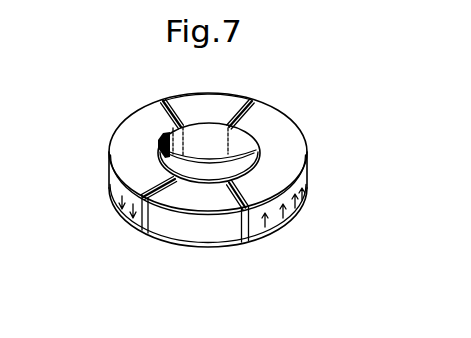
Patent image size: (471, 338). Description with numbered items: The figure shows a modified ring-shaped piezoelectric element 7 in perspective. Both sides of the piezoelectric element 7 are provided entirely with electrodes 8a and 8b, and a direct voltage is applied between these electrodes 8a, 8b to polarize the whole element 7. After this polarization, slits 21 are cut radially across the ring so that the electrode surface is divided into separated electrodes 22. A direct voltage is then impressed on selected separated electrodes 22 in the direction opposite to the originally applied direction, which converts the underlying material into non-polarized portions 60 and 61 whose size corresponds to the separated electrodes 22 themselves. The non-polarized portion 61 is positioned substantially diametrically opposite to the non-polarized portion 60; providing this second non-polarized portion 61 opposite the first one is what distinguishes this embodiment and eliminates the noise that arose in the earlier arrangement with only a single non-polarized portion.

The piezoelectric element 7 is at (311, 176).
The electrode 8a is at (123, 152).
The electrode 8b is at (277, 233).
The slits 21 is at (168, 114).
The separated electrodes 22 is at (216, 105).
The non-polarized portion 60 is at (198, 243).
The non-polarized portion 61 is at (213, 92).